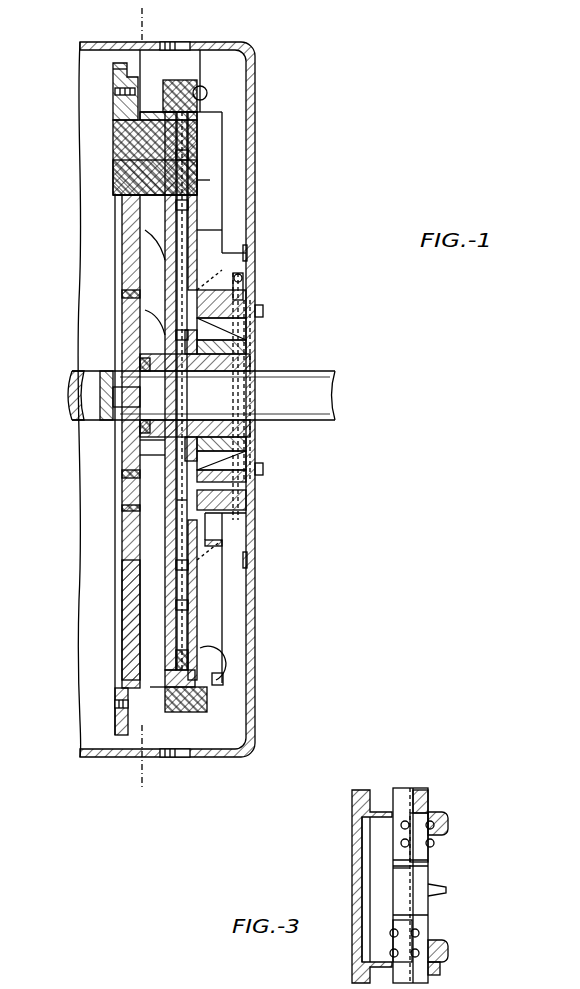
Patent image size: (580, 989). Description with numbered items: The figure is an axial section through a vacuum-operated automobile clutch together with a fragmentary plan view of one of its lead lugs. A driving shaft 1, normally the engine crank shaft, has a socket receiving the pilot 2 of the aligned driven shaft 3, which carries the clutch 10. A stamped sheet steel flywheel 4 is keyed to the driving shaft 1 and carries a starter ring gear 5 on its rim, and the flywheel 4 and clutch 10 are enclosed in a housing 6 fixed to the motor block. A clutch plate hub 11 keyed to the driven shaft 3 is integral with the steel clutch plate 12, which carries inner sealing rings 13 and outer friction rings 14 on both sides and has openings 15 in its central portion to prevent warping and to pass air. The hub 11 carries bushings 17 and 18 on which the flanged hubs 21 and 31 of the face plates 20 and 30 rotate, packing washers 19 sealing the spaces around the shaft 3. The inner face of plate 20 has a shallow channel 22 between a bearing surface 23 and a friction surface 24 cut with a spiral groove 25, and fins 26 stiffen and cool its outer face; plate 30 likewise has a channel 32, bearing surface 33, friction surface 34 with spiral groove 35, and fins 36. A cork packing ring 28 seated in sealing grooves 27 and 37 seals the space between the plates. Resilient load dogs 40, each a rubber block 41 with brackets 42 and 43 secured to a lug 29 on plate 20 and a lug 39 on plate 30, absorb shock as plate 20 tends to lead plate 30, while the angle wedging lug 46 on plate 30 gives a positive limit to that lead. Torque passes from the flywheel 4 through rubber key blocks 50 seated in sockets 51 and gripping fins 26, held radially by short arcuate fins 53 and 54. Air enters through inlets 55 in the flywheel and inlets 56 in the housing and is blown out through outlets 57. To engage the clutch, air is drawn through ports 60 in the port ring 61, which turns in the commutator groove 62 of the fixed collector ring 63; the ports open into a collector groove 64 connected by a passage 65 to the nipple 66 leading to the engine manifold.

In FIG. 1, the driving shaft 1 is at (75, 385).
In FIG. 1, the pilot 2 is at (113, 424).
In FIG. 1, the driven shaft 3 is at (316, 412).
In FIG. 1, the flywheel 4 is at (120, 20).
In FIG. 3, the flywheel 4 is at (338, 853).
In FIG. 1, the starter ring gear 5 is at (116, 718).
In FIG. 1, the housing 6 is at (180, 73).
In FIG. 1, the clutch 10 is at (226, 666).
In FIG. 1, the clutch plate hub 11 is at (130, 425).
In FIG. 1, the clutch plate 12 is at (182, 530).
In FIG. 1, the inner sealing rings 13 is at (170, 462).
In FIG. 1, the outer friction rings 14 is at (189, 609).
In FIG. 1, the openings 15 is at (172, 242).
In FIG. 1, the bushing 17 is at (160, 355).
In FIG. 1, the bushing 18 is at (228, 347).
In FIG. 1, the packing washers 19 is at (145, 362).
In FIG. 1, the face plate 20 is at (140, 513).
In FIG. 3, the face plate 20 is at (400, 790).
In FIG. 1, the flanged hub 21 is at (140, 462).
In FIG. 1, the annular shallow channel 22 is at (160, 262).
In FIG. 1, the inner annular bearing surface 23 is at (165, 330).
In FIG. 1, the outer annular friction surface 24 is at (140, 200).
In FIG. 1, the spiral groove 25 is at (172, 596).
In FIG. 1, the fins 26 is at (133, 232).
In FIG. 3, the fins 26 is at (393, 877).
In FIG. 1, the annular sealing groove 27 is at (170, 688).
In FIG. 1, the packing ring 28 is at (195, 130).
In FIG. 3, the packing ring 28 is at (410, 790).
In FIG. 3, the lug 29 is at (403, 944).
In FIG. 1, the face plate 30 is at (187, 568).
In FIG. 3, the face plate 30 is at (420, 790).
In FIG. 1, the flanged hub 31 is at (247, 460).
In FIG. 1, the shallow channel 32 is at (198, 233).
In FIG. 1, the annular bearing surface 33 is at (228, 333).
In FIG. 1, the friction surface 34 is at (197, 186).
In FIG. 1, the spiral groove 35 is at (192, 150).
In FIG. 1, the fins 36 is at (216, 142).
In FIG. 3, the fins 36 is at (449, 817).
In FIG. 1, the groove 37 is at (205, 680).
In FIG. 3, the lug 39 is at (420, 816).
In FIG. 3, the resilient load dogs 40 is at (392, 868).
In FIG. 1, the block of rubber 41 is at (207, 93).
In FIG. 3, the block of rubber 41 is at (419, 880).
In FIG. 3, the bracket 42 is at (428, 918).
In FIG. 3, the bracket 43 is at (428, 862).
In FIG. 1, the wedging lug 46 is at (212, 707).
In FIG. 1, the resilient key blocks 50 is at (140, 137).
In FIG. 3, the resilient key blocks 50 is at (368, 938).
In FIG. 1, the sockets 51 is at (118, 195).
In FIG. 1, the short arcuate fin 53 is at (122, 218).
In FIG. 1, the short arcuate fin 54 is at (166, 100).
In FIG. 1, the inlets 55 is at (138, 299).
In FIG. 1, the inlets 56 is at (248, 255).
In FIG. 1, the outlets 57 is at (192, 42).
In FIG. 1, the ports 60 is at (205, 286).
In FIG. 1, the port ring 61 is at (247, 478).
In FIG. 1, the annular commutator groove 62 is at (250, 505).
In FIG. 1, the fixed collector ring 63 is at (247, 522).
In FIG. 1, the collector groove 64 is at (264, 311).
In FIG. 1, the passage 65 is at (247, 296).
In FIG. 1, the collector ring nipple 66 is at (244, 278).